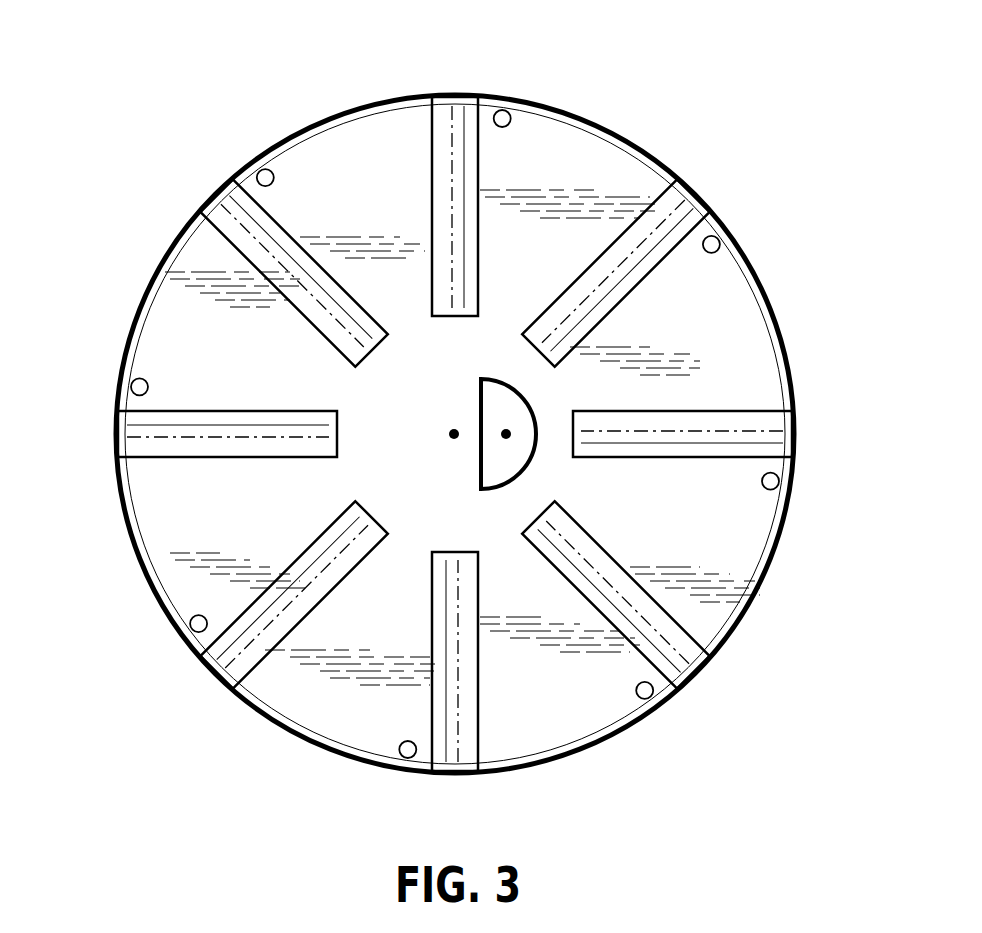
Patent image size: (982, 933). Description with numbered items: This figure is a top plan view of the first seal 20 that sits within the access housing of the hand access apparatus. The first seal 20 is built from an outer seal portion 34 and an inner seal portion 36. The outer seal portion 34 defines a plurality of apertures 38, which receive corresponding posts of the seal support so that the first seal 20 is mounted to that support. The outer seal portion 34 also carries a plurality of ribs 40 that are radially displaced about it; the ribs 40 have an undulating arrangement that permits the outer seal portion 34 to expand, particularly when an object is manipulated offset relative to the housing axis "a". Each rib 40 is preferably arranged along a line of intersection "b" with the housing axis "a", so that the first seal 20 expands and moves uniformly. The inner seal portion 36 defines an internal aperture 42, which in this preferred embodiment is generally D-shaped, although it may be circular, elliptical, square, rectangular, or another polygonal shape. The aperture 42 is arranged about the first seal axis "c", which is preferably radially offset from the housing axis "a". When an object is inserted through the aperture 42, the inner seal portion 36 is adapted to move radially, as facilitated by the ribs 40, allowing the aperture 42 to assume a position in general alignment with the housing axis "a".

The first seal 20 is at (190, 178).
The outer seal portion 34 is at (732, 307).
The inner seal portion 36 is at (412, 473).
The apertures 38 is at (496, 112).
The ribs 40 is at (678, 197).
The internal aperture 42 is at (518, 460).
The housing axis a is at (452, 432).
The line of intersection b is at (273, 255).
The first seal axis c is at (506, 428).